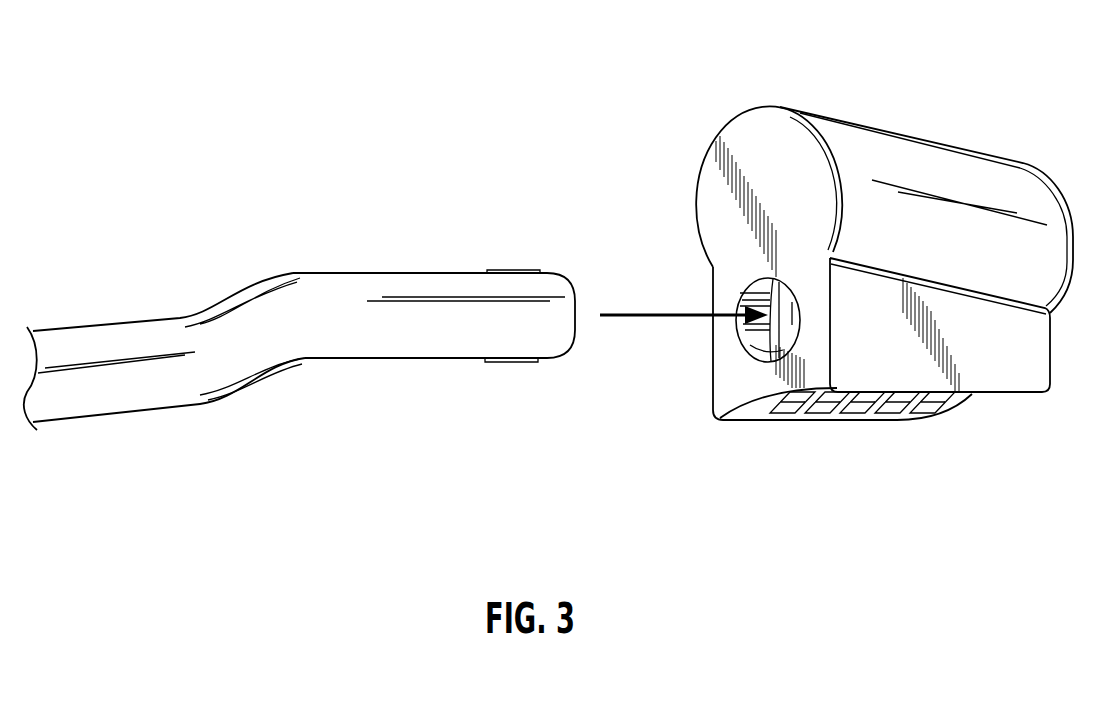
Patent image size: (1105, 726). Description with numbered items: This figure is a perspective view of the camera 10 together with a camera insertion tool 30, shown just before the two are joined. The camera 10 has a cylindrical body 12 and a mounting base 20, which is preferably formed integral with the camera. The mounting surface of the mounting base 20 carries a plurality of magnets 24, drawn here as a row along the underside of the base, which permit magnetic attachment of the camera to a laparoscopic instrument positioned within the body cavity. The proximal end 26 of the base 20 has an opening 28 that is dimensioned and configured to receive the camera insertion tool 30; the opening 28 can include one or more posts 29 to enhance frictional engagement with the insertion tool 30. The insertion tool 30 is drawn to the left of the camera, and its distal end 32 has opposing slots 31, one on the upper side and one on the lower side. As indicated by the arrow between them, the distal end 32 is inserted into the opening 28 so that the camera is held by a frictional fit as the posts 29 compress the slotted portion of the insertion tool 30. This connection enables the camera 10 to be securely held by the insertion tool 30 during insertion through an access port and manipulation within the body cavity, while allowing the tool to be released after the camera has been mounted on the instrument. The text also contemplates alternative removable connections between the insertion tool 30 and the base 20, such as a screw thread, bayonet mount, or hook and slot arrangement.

The camera 10 is at (852, 235).
The cylindrical body 12 is at (940, 143).
The mounting base 20 is at (1038, 372).
The magnets 24 is at (893, 410).
The proximal end 26 is at (847, 88).
The opening 28 is at (745, 333).
The posts 29 is at (770, 345).
The camera insertion tool 30 is at (331, 292).
The opposing slots 31 is at (503, 272).
The distal end 32 is at (460, 311).